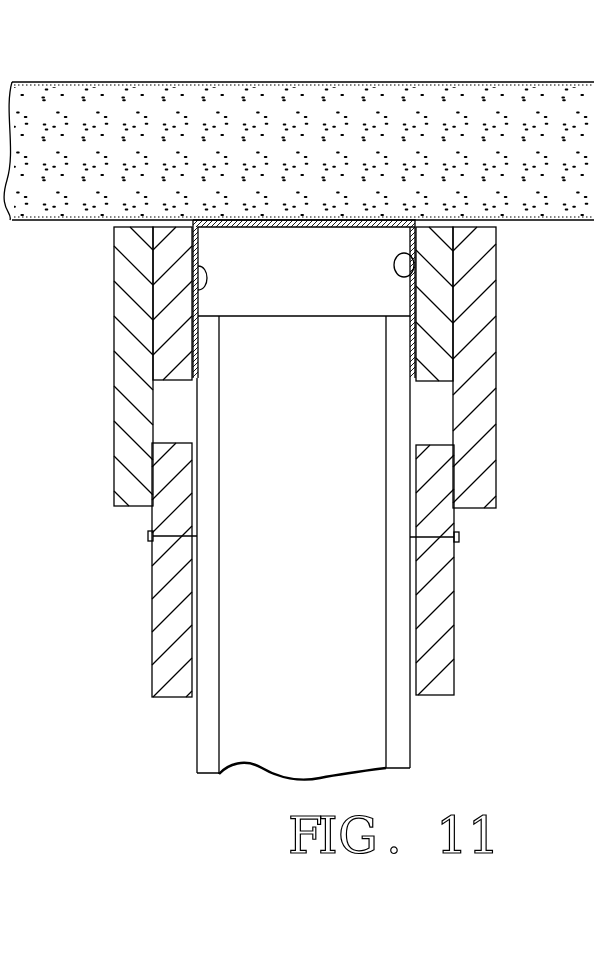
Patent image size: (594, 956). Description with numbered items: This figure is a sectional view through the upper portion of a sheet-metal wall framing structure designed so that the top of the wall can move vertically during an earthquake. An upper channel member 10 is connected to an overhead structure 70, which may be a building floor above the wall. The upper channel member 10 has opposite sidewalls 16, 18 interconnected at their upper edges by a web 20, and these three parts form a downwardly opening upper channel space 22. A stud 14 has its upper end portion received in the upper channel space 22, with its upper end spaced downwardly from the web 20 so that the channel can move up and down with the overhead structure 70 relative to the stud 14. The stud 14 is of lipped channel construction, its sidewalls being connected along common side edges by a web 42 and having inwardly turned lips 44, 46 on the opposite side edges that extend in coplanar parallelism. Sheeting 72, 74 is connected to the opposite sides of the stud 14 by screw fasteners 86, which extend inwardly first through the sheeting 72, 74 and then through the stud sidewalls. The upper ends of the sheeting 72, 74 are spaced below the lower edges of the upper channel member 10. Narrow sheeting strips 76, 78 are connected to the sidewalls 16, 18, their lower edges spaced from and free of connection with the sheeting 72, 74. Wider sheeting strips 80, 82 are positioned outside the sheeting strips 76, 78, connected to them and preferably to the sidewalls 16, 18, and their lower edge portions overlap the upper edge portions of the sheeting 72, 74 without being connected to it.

The upper channel member 10 is at (358, 220).
The stud 14 is at (181, 724).
The sidewall 16 is at (197, 283).
The sidewall 18 is at (414, 270).
The web 20 is at (280, 228).
The upper channel space 22 is at (362, 288).
The web 42 is at (362, 622).
The lip 44 is at (208, 422).
The lip 46 is at (396, 463).
The overhead structure 70 is at (112, 102).
The sheeting 72 is at (170, 598).
The sheeting 74 is at (437, 667).
The sheeting strip 76 is at (165, 249).
The sheeting strip 78 is at (444, 250).
The sheeting strip 80 is at (125, 405).
The sheeting strip 82 is at (490, 383).
The screw fastener 86 is at (160, 540).